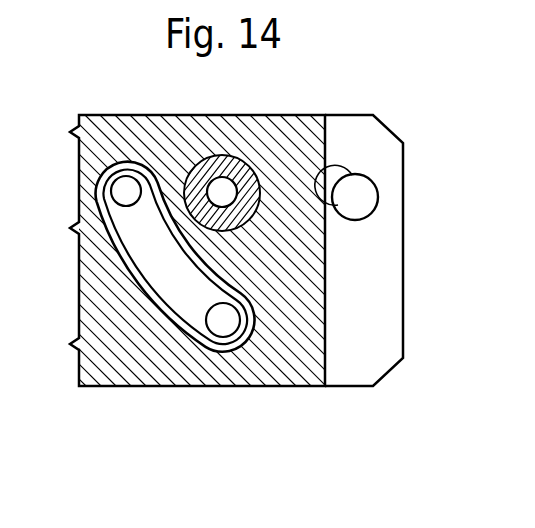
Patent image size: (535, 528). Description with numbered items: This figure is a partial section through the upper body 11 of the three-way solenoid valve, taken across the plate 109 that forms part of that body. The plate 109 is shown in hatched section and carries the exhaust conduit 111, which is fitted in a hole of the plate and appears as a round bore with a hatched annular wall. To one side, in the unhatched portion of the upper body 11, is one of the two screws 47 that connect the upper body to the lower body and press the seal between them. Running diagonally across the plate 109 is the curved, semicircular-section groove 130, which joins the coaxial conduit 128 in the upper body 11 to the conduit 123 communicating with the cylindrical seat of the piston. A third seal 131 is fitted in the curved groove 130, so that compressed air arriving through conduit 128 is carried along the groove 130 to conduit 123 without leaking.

The upper body 11 is at (373, 362).
The screws 47 is at (362, 201).
The plate 109 is at (113, 378).
The exhaust conduit 111 is at (222, 183).
The conduit 123 is at (111, 189).
The coaxial conduit 128 is at (218, 328).
The curved groove 130 is at (160, 262).
The third seal 131 is at (110, 246).